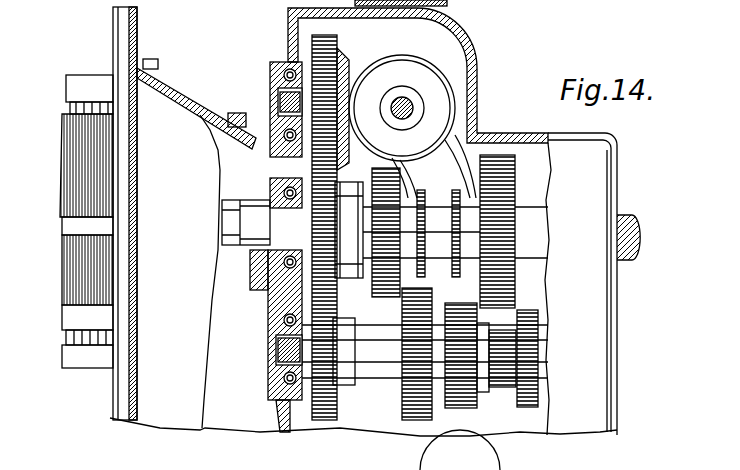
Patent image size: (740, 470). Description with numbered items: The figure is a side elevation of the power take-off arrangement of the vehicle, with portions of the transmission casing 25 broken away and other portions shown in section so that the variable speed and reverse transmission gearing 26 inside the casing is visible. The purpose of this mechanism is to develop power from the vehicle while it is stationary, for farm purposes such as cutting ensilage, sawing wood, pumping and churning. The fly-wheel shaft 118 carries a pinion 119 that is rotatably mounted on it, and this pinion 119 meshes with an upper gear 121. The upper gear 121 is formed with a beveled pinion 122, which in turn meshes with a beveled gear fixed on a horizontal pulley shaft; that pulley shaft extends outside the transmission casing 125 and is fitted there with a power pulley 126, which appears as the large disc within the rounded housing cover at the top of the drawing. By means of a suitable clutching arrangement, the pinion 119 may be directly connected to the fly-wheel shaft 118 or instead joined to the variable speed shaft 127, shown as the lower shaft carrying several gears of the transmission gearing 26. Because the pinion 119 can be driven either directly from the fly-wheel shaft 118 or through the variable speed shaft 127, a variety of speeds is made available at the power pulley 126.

The transmission casing 25 is at (606, 342).
The variable speed and reverse transmission gearing 26 is at (439, 246).
The fly-wheel shaft 118 is at (238, 228).
The pinion 119 is at (325, 237).
The upper gear 121 is at (312, 42).
The beveled pinion 122 is at (362, 62).
The transmission casing 125 is at (534, 133).
The power pulley 126 is at (442, 90).
The variable speed shaft 127 is at (372, 366).